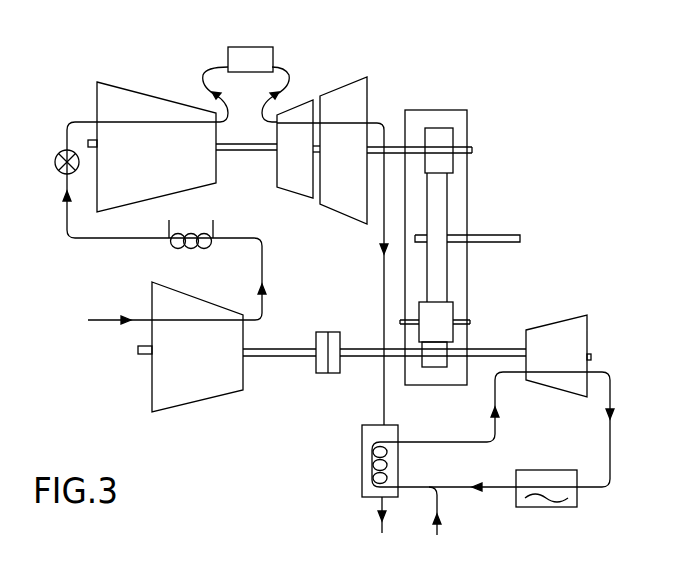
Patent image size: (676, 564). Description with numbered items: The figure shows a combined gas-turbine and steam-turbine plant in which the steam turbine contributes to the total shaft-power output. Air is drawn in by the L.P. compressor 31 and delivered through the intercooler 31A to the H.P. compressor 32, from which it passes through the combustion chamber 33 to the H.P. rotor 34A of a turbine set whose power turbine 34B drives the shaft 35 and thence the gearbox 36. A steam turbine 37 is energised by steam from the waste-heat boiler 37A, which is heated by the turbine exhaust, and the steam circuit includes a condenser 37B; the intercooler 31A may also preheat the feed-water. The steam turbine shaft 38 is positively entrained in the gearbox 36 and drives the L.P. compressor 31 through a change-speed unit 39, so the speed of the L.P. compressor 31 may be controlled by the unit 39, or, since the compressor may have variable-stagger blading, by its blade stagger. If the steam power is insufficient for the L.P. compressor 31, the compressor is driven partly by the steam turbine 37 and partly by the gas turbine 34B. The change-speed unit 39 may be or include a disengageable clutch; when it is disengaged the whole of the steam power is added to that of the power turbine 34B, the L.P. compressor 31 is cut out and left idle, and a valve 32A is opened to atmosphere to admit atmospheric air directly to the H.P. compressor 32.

The L.P. compressor 31 is at (203, 359).
The intercooler 31A is at (221, 232).
The H.P. compressor 32 is at (163, 163).
The valve 32A is at (53, 181).
The combustion chamber 33 is at (248, 58).
The H.P. rotor 34A is at (287, 168).
The power turbine 34B is at (350, 164).
The shaft 35 is at (472, 151).
The gearbox 36 is at (471, 207).
The steam turbine 37 is at (566, 354).
The waste-heat boiler 37A is at (362, 480).
The condenser 37B is at (557, 470).
The steam turbine shaft 38 is at (490, 350).
The change-speed unit 39 is at (326, 375).